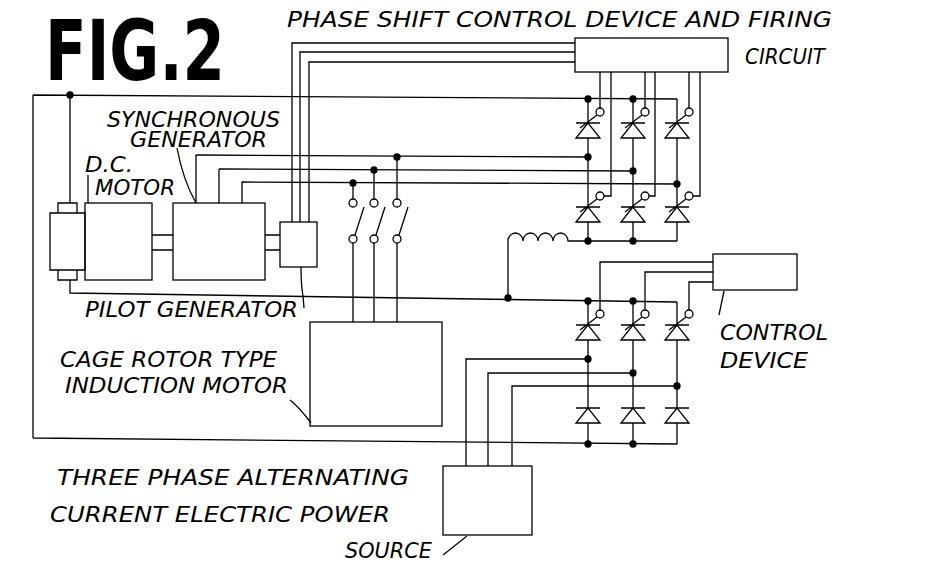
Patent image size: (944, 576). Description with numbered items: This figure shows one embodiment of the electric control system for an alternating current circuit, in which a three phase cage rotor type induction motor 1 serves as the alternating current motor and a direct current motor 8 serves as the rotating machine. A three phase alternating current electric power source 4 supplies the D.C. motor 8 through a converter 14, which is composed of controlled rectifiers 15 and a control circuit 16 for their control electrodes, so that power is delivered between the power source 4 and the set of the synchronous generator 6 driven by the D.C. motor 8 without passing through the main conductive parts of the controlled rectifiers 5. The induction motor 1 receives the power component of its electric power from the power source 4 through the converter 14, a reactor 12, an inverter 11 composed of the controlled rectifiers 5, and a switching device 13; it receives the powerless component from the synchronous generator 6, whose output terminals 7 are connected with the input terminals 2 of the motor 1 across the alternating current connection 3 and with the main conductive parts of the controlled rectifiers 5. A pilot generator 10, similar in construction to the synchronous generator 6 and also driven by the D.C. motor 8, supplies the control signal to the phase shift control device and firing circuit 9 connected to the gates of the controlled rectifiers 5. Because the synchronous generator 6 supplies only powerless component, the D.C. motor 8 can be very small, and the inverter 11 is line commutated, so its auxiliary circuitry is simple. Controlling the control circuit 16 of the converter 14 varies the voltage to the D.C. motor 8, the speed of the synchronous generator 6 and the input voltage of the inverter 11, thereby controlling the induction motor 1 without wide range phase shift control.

The cage rotor type induction motor 1 is at (376, 374).
The input terminals 2 is at (397, 318).
The alternating current connection 3 is at (426, 170).
The three phase alternating current electric power source 4 is at (561, 445).
The controlled rectifiers 5 is at (577, 127).
The synchronous generator 6 is at (219, 241).
The output terminals 7 is at (243, 200).
The direct current motor 8 is at (101, 187).
The phase shift control device and firing circuit 9 is at (510, 130).
The pilot generator 10 is at (298, 244).
The inverter 11 is at (665, 156).
The reactor 12 is at (541, 237).
The switching device 13 is at (404, 231).
The converter 14 is at (652, 401).
The controlled rectifiers 15 is at (576, 326).
The control circuit 16 is at (698, 282).